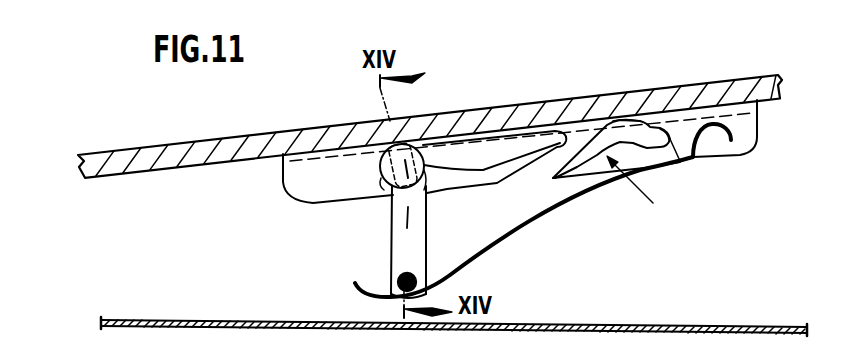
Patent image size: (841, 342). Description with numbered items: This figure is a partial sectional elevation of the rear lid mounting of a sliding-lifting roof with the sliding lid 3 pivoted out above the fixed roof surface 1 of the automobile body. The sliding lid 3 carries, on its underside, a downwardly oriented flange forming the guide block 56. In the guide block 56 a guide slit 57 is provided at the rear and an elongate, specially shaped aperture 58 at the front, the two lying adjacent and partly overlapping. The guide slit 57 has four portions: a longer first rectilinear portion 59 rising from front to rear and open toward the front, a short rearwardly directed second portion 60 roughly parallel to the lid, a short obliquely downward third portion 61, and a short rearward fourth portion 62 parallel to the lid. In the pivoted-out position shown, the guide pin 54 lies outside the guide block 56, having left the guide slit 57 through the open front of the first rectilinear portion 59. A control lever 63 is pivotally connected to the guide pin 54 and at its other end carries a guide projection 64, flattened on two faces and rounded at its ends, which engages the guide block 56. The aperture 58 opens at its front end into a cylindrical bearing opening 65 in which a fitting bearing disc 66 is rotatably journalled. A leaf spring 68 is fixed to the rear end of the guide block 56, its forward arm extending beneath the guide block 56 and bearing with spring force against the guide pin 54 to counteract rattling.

The fixed roof surface 1 is at (158, 320).
The sliding lid 3 is at (207, 141).
The guide pin 54 is at (388, 278).
The guide block 56 is at (760, 128).
The guide slit 57 is at (639, 194).
The aperture 58 is at (507, 150).
The first rectilinear portion 59 is at (575, 153).
The second portion 60 is at (627, 127).
The third portion 61 is at (650, 128).
The fourth portion 62 is at (673, 150).
The control lever 63 is at (398, 241).
The guide projection 64 is at (382, 178).
The cylindrical bearing opening 65 is at (426, 173).
The bearing disc 66 is at (433, 145).
The leaf spring 68 is at (522, 233).